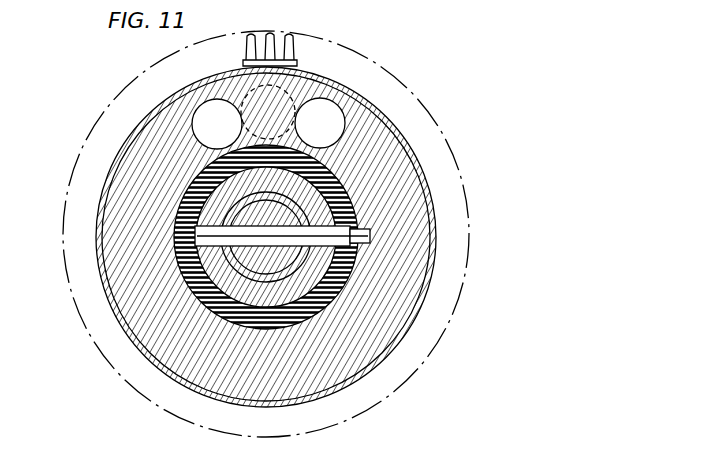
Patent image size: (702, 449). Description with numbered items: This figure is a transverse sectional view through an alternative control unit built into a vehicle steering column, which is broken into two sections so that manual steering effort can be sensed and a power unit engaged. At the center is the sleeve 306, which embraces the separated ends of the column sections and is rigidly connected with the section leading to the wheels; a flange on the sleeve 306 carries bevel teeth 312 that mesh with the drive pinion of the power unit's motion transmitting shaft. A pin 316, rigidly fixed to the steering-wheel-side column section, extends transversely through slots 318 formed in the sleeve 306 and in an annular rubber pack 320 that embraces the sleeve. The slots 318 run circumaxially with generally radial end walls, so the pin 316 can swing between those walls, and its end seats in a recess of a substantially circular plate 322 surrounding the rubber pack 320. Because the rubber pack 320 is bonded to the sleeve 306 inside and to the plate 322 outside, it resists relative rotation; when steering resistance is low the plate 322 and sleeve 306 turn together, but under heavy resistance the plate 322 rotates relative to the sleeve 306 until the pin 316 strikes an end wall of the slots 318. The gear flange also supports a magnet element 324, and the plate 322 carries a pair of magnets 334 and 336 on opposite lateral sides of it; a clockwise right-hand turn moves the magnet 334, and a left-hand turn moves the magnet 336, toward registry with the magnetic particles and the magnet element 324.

The sleeve 306 is at (355, 193).
The bevel teeth 312 is at (277, 42).
The pin 316 is at (372, 234).
The slots 318 is at (353, 255).
The annular rubber pack 320 is at (355, 277).
The plate 322 is at (402, 305).
The magnet element 324 is at (339, 48).
The magnet 334 is at (196, 118).
The magnet 336 is at (340, 120).